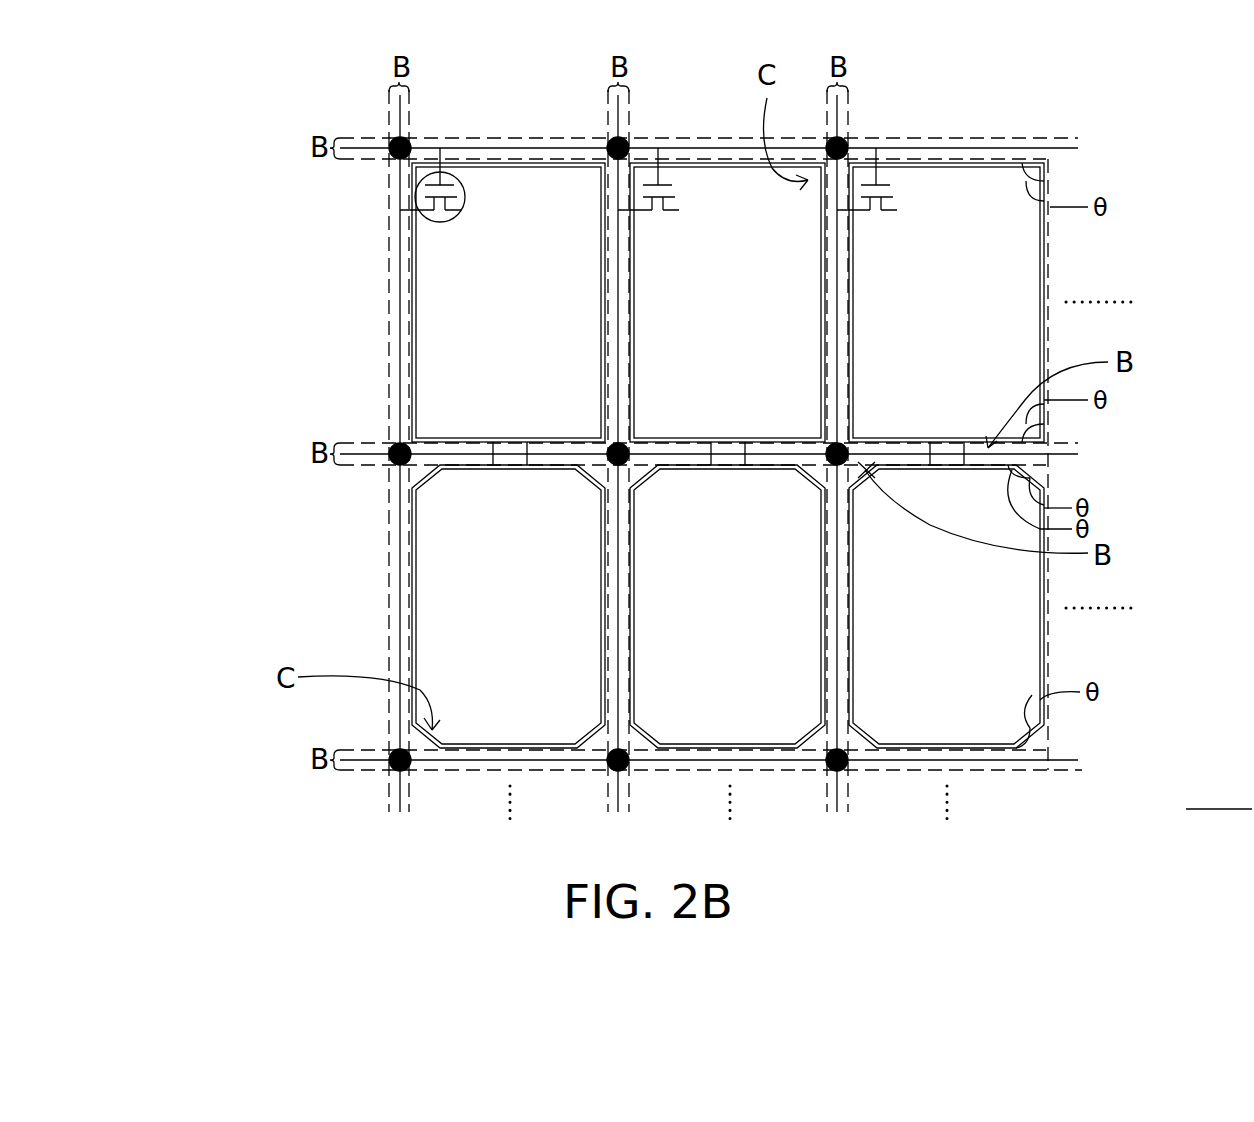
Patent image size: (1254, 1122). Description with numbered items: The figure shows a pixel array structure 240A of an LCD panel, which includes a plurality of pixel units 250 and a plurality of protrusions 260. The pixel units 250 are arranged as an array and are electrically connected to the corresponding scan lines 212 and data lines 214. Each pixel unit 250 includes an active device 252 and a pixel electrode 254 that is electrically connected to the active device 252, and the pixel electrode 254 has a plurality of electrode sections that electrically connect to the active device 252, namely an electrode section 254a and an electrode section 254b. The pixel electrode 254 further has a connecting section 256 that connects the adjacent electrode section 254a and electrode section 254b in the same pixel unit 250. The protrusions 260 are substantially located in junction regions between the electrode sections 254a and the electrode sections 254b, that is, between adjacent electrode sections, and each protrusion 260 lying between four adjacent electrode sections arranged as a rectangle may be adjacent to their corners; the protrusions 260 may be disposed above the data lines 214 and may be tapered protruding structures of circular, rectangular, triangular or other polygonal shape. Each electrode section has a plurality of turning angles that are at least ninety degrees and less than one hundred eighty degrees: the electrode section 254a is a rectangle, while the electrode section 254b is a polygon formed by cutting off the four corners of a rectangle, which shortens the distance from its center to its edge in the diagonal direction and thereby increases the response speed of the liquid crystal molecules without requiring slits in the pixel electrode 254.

The scan line 212 is at (471, 148).
The data line 214 is at (400, 552).
The pixel array structure 240A is at (1219, 794).
The pixel unit 250 is at (212, 220).
The active device 252 is at (430, 222).
The pixel electrode 254 is at (285, 265).
The electrode section 254a is at (445, 265).
The electrode section 254b is at (475, 480).
The connecting section 256 is at (513, 440).
The protrusion 260 is at (389, 155).